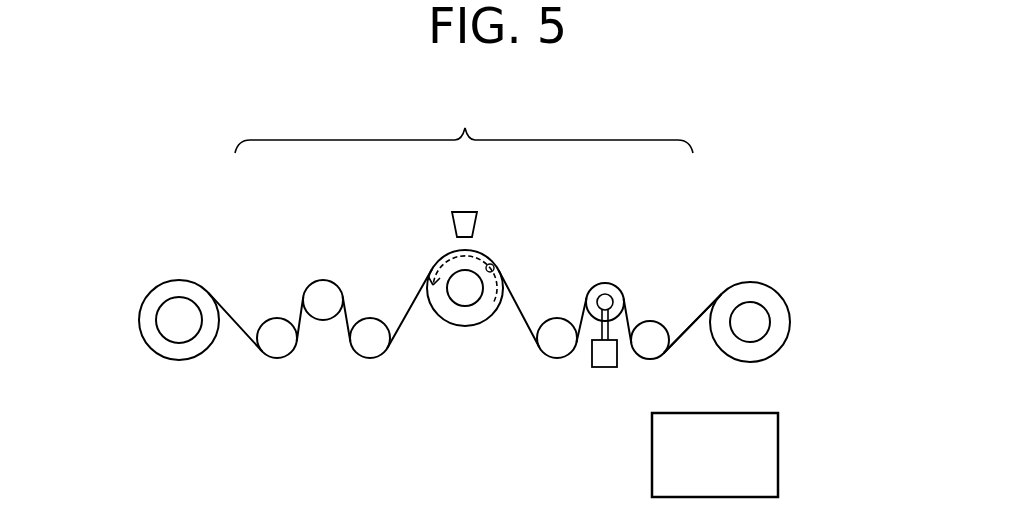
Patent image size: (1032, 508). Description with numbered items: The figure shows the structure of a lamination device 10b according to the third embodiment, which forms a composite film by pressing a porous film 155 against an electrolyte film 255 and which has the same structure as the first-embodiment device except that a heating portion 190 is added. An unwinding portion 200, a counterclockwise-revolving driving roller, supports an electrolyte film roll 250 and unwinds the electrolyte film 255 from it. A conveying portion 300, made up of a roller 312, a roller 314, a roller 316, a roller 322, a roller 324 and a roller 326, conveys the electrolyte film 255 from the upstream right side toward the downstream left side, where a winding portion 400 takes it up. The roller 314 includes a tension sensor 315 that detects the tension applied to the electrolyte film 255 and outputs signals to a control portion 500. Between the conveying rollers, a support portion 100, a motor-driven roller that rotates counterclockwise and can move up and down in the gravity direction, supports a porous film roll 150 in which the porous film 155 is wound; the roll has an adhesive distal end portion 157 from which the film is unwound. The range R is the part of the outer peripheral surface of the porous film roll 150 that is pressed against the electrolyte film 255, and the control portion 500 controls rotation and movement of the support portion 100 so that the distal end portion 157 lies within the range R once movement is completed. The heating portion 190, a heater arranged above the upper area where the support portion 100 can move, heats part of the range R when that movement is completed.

The lamination device 10b is at (774, 186).
The support portion 100 is at (462, 292).
The porous film roll 150 is at (447, 310).
The porous film 155 is at (487, 317).
The distal end portion 157 is at (443, 256).
The range R is at (494, 267).
The heating portion 190 is at (477, 223).
The unwinding portion 200 is at (784, 338).
The electrolyte film roll 250 is at (782, 322).
The electrolyte film 255 is at (707, 313).
The conveying portion 300 is at (464, 229).
The roller 312 is at (650, 321).
The roller 314 is at (605, 283).
The tension sensor 315 is at (604, 367).
The roller 316 is at (557, 318).
The roller 322 is at (370, 318).
The roller 324 is at (323, 280).
The roller 326 is at (277, 318).
The winding portion 400 is at (177, 320).
The control portion 500 is at (778, 453).